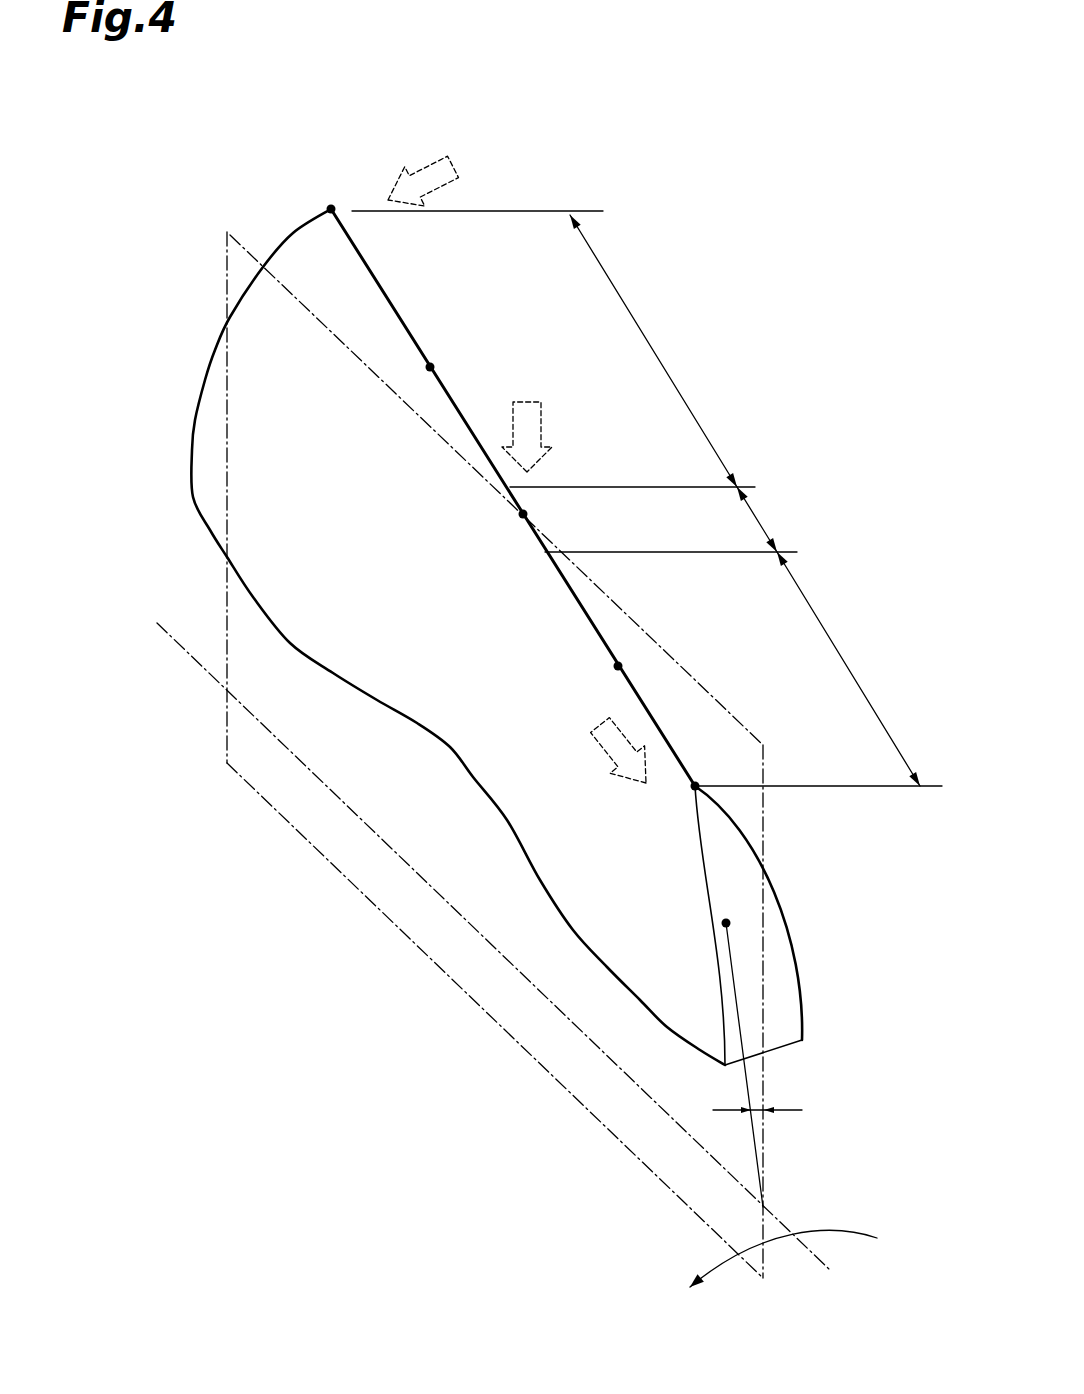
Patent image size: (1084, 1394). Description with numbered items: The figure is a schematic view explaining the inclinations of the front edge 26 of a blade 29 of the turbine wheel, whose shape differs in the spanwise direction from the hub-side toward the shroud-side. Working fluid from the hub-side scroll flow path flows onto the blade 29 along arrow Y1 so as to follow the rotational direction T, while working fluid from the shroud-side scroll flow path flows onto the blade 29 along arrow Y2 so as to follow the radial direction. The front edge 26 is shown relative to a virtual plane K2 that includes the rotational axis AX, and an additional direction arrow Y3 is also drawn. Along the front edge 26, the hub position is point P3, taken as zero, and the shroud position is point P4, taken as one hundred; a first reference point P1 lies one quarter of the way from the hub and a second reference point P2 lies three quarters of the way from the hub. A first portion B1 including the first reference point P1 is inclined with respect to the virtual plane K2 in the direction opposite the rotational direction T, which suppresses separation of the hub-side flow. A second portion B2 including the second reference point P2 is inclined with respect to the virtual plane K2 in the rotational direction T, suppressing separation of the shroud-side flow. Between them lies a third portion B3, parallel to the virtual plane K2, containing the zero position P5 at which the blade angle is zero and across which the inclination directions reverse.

The front edge 26 is at (386, 292).
The blade 29 is at (496, 616).
The virtual plane K2 is at (227, 300).
The rotational axis AX is at (160, 622).
The first reference point P1 is at (434, 365).
The second reference point P2 is at (621, 664).
The hub position point P3 is at (332, 208).
The shroud position point P4 is at (698, 783).
The zero position P5 is at (526, 514).
The hub-side flow direction arrow Y1 is at (447, 157).
The shroud-side flow direction arrow Y2 is at (600, 730).
The third direction Y3 is at (539, 402).
The first portion B1 is at (655, 352).
The second portion B2 is at (845, 653).
The third portion B3 is at (760, 520).
The rotational direction T is at (860, 1235).